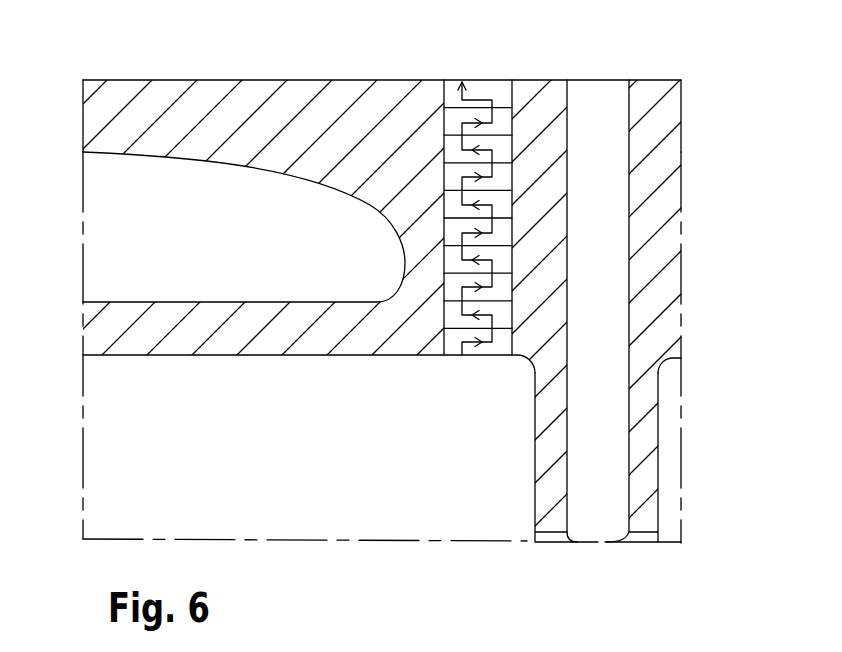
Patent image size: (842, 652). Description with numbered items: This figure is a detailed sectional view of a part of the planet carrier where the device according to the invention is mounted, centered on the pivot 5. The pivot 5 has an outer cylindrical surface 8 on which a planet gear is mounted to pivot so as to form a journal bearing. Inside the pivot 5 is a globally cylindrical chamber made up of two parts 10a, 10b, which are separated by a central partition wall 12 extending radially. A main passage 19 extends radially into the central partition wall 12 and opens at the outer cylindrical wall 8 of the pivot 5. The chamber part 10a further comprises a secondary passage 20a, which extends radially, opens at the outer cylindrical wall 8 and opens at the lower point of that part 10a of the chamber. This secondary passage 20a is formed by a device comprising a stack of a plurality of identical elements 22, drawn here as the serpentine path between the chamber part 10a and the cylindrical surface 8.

The pivot 5 is at (262, 120).
The cylindrical surface 8 is at (168, 78).
The first part of the chamber 10a is at (182, 434).
The second part of the chamber 10b is at (670, 418).
The central partition wall 12 is at (640, 462).
The main passage 19 is at (600, 208).
The secondary passage 20a is at (485, 67).
The identical elements 22 is at (503, 127).